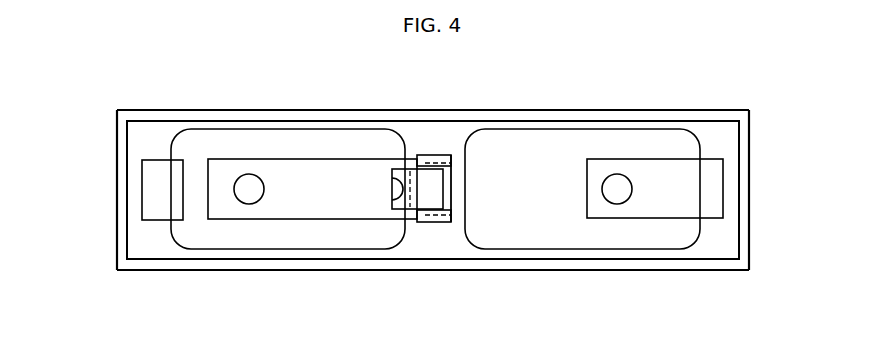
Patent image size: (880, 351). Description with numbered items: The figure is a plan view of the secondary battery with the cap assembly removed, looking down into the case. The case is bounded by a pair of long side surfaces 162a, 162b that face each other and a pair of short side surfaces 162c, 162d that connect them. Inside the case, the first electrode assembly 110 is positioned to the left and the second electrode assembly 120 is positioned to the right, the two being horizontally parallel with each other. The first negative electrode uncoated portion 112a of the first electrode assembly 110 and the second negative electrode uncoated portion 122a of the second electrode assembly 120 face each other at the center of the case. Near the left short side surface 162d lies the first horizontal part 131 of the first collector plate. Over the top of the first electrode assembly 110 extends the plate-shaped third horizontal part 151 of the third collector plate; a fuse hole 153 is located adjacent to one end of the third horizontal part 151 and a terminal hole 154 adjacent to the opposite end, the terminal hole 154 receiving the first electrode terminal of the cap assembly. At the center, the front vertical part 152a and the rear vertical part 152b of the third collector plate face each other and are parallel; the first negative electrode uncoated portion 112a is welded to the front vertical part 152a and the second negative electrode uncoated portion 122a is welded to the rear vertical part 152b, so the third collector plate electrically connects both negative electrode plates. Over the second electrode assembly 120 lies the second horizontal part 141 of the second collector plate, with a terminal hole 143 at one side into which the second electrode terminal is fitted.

The first electrode assembly 110 is at (311, 138).
The second electrode assembly 120 is at (570, 140).
The first negative electrode uncoated portion 112a is at (425, 215).
The second negative electrode uncoated portion 122a is at (458, 161).
The first horizontal part 131 is at (152, 215).
The second horizontal part 141 is at (715, 202).
The terminal hole 143 is at (602, 190).
The third horizontal part 151 is at (282, 213).
The front vertical part 152a is at (443, 222).
The rear vertical part 152b is at (427, 155).
The fuse hole 153 is at (392, 203).
The terminal hole 154 is at (255, 191).
The long side surface 162a is at (608, 270).
The long side surface 162b is at (718, 111).
The short side surface 162c is at (743, 178).
The short side surface 162d is at (122, 193).